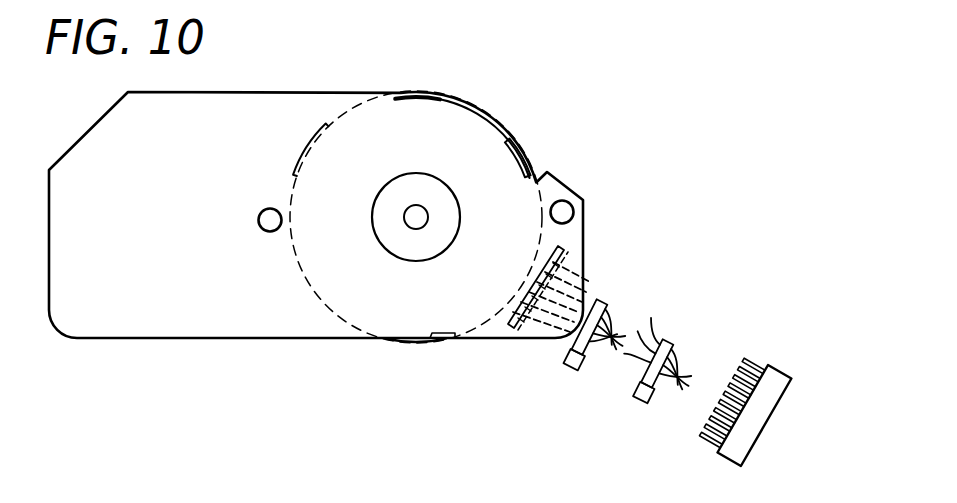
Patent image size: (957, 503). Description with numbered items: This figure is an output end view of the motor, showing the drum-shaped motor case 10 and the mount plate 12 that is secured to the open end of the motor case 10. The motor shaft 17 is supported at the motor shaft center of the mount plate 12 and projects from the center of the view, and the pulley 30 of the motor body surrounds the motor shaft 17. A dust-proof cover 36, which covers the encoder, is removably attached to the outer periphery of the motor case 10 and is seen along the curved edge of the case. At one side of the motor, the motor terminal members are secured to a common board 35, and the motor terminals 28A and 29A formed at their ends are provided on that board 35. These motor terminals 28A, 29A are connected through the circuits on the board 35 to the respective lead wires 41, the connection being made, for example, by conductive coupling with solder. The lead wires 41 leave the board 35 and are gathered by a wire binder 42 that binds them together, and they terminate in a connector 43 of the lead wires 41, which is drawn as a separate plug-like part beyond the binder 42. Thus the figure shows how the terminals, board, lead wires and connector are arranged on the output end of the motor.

The motor case 10 is at (316, 196).
The dust-proof cover 36 is at (450, 93).
The mount plate 12 is at (128, 307).
The motor shaft 17 is at (410, 208).
The pulley 30 is at (390, 250).
The motor terminal 28A is at (522, 325).
The board 35 is at (583, 229).
The motor terminal 29A is at (560, 262).
The lead wires 41 is at (628, 313).
The wire binder 42 is at (640, 393).
The connector 43 is at (747, 427).